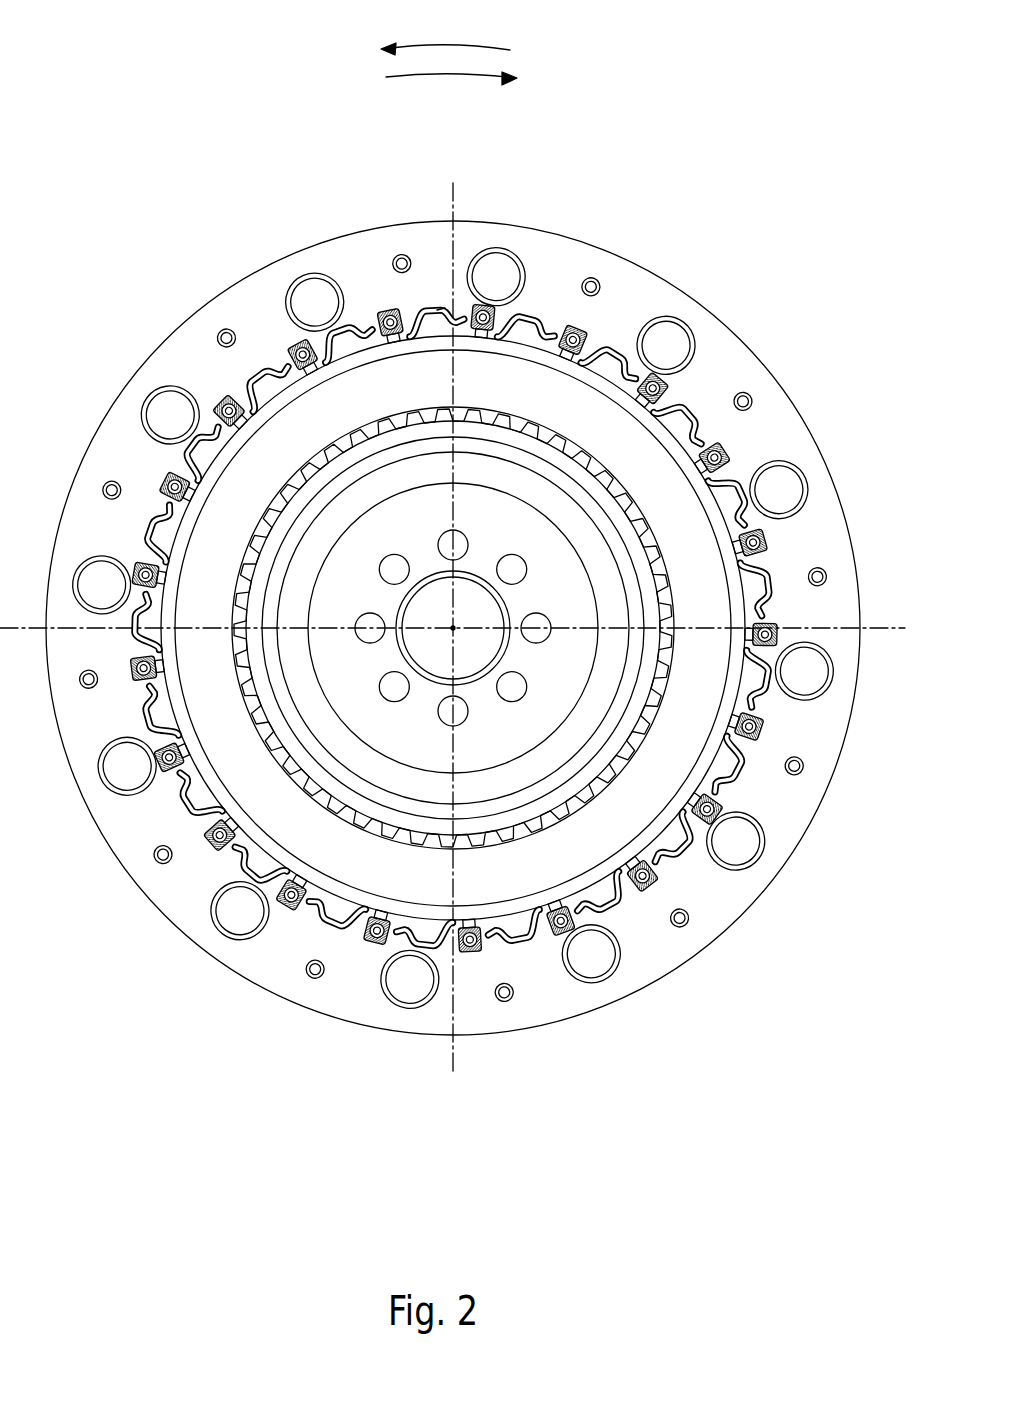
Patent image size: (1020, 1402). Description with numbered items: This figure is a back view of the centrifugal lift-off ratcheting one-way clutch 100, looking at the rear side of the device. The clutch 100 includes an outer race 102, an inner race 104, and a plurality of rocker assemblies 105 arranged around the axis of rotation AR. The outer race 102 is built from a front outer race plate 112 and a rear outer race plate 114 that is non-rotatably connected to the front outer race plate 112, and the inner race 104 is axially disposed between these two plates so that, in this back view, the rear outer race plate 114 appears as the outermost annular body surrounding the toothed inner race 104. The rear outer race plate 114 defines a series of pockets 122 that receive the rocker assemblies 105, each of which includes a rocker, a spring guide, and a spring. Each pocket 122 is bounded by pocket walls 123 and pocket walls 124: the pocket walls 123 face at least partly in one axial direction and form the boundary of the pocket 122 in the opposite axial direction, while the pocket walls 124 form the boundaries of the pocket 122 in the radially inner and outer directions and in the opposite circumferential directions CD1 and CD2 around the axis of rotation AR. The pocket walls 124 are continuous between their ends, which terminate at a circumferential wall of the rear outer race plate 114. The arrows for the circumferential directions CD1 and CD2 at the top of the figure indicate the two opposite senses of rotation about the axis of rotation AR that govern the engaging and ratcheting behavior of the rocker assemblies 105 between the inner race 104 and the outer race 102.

The centrifugal lift-off ratcheting one-way clutch 100 is at (724, 134).
The outer race 102 is at (592, 226).
The inner race 104 is at (410, 362).
The rocker assemblies 105 is at (435, 298).
The front outer race plate 112 is at (480, 246).
The rear outer race plate 114 is at (222, 290).
The pockets 122 is at (684, 398).
The pocket walls 123 is at (663, 412).
The pocket walls 124 is at (763, 570).
The axis of rotation AR is at (455, 630).
The circumferential direction CD1 is at (456, 46).
The circumferential direction CD2 is at (487, 77).